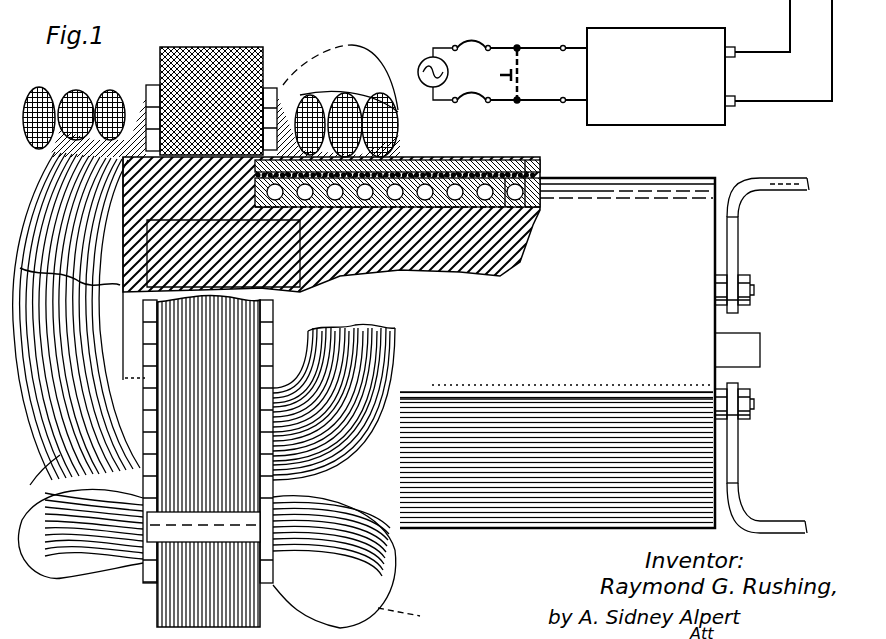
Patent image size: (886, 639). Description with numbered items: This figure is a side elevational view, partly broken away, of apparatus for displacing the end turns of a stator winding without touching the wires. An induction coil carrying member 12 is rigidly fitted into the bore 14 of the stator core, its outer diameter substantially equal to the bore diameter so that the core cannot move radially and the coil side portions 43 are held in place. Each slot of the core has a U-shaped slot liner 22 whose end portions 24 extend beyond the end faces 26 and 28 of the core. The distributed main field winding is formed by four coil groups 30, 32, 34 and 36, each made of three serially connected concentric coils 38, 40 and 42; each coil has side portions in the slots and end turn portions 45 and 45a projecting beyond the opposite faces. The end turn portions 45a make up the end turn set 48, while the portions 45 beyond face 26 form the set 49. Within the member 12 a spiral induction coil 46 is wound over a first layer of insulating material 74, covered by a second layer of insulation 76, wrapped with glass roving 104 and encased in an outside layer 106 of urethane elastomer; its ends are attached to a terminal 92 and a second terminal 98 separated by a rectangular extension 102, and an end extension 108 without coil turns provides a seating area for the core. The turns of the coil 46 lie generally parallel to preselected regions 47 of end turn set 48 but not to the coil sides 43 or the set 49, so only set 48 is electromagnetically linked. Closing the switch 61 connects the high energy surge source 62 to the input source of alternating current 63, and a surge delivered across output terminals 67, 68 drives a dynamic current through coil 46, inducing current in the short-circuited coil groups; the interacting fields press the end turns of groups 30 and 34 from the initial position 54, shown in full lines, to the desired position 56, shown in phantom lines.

The induction coil carrying member 12 is at (640, 281).
The bore 14 is at (150, 190).
The slot liner 22 is at (152, 79).
The end portions 24 is at (280, 88).
The end face 26 is at (160, 47).
The end face 28 is at (268, 50).
The coil group 30 is at (426, 128).
The coil group 32 is at (405, 365).
The coil group 34 is at (405, 560).
The coil group 36 is at (52, 201).
The outermost coil 38 is at (41, 88).
The intermediate coil 40 is at (74, 90).
The innermost coil 42 is at (107, 90).
The coil side portions 43 is at (118, 570).
The end turn portions 45 is at (42, 572).
The end turn portions 45a is at (385, 567).
The spiral induction coil 46 is at (506, 160).
The preselected regions 47 is at (398, 350).
The end turn set 48 is at (445, 388).
The end turn set 49 is at (55, 455).
The initial position 54 is at (398, 550).
The desired position 56 is at (385, 62).
The switch 61 is at (554, 43).
The high energy surge source 62 is at (665, 55).
The input source of alternating current 63 is at (448, 72).
The output terminal 67 is at (736, 48).
The output terminal 68 is at (737, 106).
The first layer of insulating material 74 is at (523, 162).
The second layer of insulation 76 is at (412, 160).
The terminal 92 is at (755, 291).
The second terminal 98 is at (755, 408).
The extension 102 is at (762, 352).
The glass roving 104 is at (437, 160).
The outside layer 106 is at (470, 160).
The end extension 108 is at (180, 245).